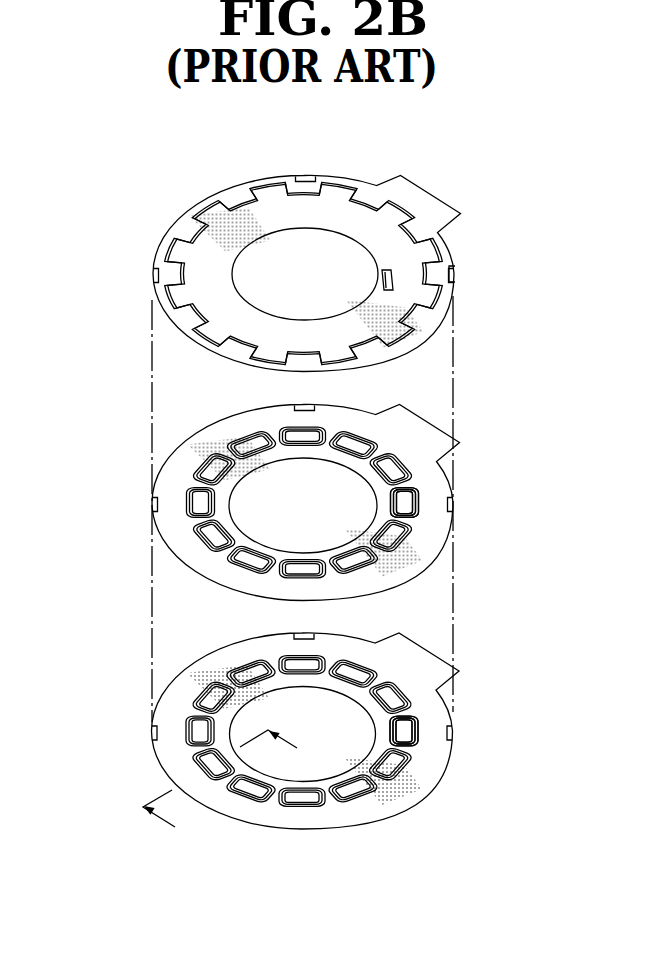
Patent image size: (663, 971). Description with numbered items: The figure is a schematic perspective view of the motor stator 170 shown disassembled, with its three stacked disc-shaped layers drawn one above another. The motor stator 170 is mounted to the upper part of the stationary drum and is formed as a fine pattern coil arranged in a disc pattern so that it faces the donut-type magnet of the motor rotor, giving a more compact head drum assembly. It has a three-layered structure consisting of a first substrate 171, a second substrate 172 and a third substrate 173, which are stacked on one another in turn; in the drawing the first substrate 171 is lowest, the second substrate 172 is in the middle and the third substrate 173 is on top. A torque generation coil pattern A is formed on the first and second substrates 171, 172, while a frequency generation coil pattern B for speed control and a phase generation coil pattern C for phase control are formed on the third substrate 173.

The motor stator 170 is at (143, 188).
The first substrate 171 is at (172, 767).
The second substrate 172 is at (165, 522).
The third substrate 173 is at (153, 293).
The torque generation coil pattern A is at (420, 500).
The frequency generation coil pattern B is at (450, 291).
The phase generation coil pattern C is at (398, 272).